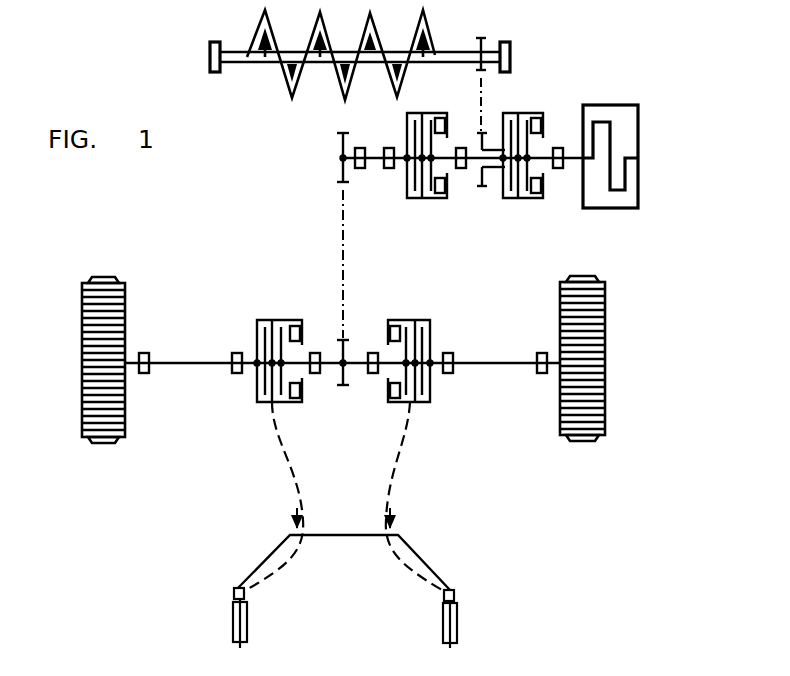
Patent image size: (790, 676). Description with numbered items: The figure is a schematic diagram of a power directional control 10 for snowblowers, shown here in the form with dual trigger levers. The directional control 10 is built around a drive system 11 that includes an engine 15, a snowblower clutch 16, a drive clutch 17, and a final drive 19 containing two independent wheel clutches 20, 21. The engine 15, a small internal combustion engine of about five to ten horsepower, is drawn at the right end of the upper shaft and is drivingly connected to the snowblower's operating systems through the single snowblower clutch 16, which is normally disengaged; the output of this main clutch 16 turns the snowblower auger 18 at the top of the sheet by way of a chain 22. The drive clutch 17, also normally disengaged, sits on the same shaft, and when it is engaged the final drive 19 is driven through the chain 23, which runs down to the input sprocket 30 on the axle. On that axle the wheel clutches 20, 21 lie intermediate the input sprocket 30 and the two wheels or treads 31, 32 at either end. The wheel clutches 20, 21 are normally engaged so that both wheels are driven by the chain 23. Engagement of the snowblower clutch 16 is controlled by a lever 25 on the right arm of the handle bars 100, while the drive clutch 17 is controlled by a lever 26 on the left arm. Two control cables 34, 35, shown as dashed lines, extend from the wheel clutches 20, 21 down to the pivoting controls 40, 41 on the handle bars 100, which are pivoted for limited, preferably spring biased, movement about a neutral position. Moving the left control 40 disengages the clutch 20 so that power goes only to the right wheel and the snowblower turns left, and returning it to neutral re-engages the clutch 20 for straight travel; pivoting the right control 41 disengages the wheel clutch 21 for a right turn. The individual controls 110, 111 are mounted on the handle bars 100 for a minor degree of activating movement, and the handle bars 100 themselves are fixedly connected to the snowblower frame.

The power directional control 10 is at (515, 474).
The drive system 11 is at (320, 157).
The engine 15 is at (640, 193).
The snowblower clutch 16 is at (520, 198).
The drive clutch 17 is at (425, 198).
The snowblower auger 18 is at (437, 30).
The final drive 19 is at (246, 302).
The wheel clutch 20 is at (264, 402).
The wheel clutch 21 is at (432, 389).
The chain 22 is at (483, 87).
The chain 23 is at (343, 238).
The lever 25 is at (458, 617).
The lever 26 is at (233, 621).
The input sprocket 30 is at (343, 352).
The wheel 31 is at (598, 350).
The wheel 32 is at (88, 405).
The control cable 34 is at (290, 477).
The control cable 35 is at (403, 470).
The pivoting control 40 is at (252, 600).
The pivoting control 41 is at (437, 603).
The handle bars 100 is at (258, 556).
The individual control 110 is at (457, 593).
The individual control 111 is at (233, 592).